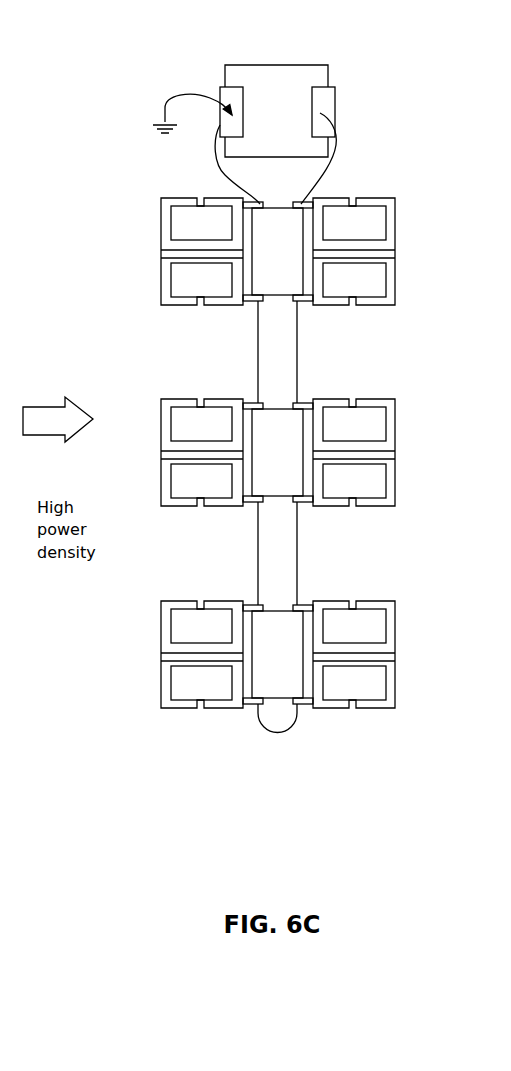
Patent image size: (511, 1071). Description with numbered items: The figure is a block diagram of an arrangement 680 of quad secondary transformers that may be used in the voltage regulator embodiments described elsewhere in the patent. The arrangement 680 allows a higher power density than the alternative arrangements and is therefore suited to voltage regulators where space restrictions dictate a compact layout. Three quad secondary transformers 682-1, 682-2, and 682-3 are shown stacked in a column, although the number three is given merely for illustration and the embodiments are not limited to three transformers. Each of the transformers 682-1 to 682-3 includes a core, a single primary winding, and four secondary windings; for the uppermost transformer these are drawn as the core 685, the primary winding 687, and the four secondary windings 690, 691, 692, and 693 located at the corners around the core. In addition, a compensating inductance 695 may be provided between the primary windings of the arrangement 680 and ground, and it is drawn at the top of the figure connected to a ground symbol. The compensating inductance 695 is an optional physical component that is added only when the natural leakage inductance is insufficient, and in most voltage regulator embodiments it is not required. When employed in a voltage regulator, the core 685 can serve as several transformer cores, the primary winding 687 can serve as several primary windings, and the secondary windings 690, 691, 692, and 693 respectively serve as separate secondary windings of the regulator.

The arrangement of quad secondary transformers 680 is at (265, 440).
The compensating inductance 695 is at (258, 65).
The core 685 is at (293, 203).
The primary winding 687 is at (273, 198).
The secondary winding 690 is at (161, 212).
The secondary winding 691 is at (396, 212).
The secondary winding 692 is at (161, 292).
The secondary winding 693 is at (396, 297).
The quad secondary transformer 682-1 is at (121, 257).
The quad secondary transformer 682-2 is at (121, 458).
The quad secondary transformer 682-3 is at (121, 660).